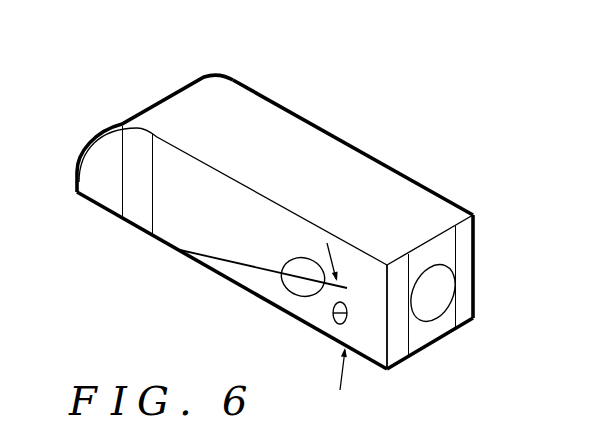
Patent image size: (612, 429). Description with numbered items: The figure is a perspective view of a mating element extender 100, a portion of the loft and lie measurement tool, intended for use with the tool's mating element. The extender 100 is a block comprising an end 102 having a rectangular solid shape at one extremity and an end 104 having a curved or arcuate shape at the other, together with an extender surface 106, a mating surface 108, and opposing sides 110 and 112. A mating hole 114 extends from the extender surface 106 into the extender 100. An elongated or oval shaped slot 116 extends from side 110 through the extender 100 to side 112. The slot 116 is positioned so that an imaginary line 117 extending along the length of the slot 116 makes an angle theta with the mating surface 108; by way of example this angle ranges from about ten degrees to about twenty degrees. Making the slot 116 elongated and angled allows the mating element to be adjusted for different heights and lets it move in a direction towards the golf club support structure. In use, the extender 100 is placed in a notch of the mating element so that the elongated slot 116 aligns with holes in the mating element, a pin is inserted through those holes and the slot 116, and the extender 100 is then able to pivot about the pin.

The mating element extender 100 is at (162, 351).
The end 102 is at (492, 292).
The end 104 is at (146, 86).
The extender surface 106 is at (402, 343).
The mating surface 108 is at (232, 281).
The side 110 is at (148, 219).
The side 112 is at (477, 247).
The mating hole 114 is at (432, 307).
The elongated slot 116 is at (288, 262).
The imaginary line 117 is at (267, 271).